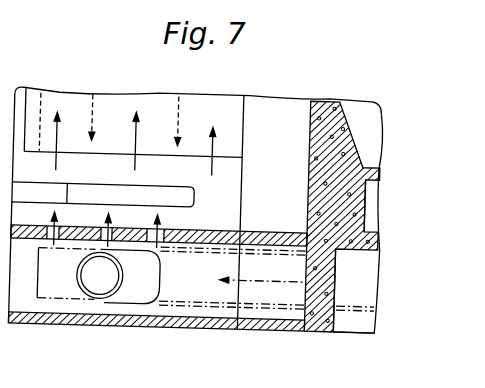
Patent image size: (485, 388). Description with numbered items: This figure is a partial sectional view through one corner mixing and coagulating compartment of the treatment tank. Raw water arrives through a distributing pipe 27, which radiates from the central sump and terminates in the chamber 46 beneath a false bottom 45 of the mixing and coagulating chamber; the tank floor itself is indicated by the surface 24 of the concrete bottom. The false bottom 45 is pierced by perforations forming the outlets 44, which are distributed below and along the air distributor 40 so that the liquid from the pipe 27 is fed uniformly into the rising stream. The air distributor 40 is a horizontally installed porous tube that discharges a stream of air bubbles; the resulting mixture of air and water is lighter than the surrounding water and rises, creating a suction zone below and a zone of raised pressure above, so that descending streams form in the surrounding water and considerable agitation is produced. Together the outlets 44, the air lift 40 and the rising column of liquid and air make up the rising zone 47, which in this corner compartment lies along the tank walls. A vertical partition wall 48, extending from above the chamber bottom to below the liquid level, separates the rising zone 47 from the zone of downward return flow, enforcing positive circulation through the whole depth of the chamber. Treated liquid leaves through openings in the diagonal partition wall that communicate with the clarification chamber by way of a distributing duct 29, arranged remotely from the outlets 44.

The rising zone 47 is at (170, 127).
The partition wall 48 is at (124, 150).
The air distributor 40 is at (160, 190).
The false bottom 45 is at (212, 226).
The outlets 44 is at (66, 225).
The chamber below the false bottom 46 is at (34, 280).
The distributing duct 29 is at (380, 190).
The distributing pipe 27 is at (351, 304).
The surface of the concrete tank bottom 24 is at (3, 376).